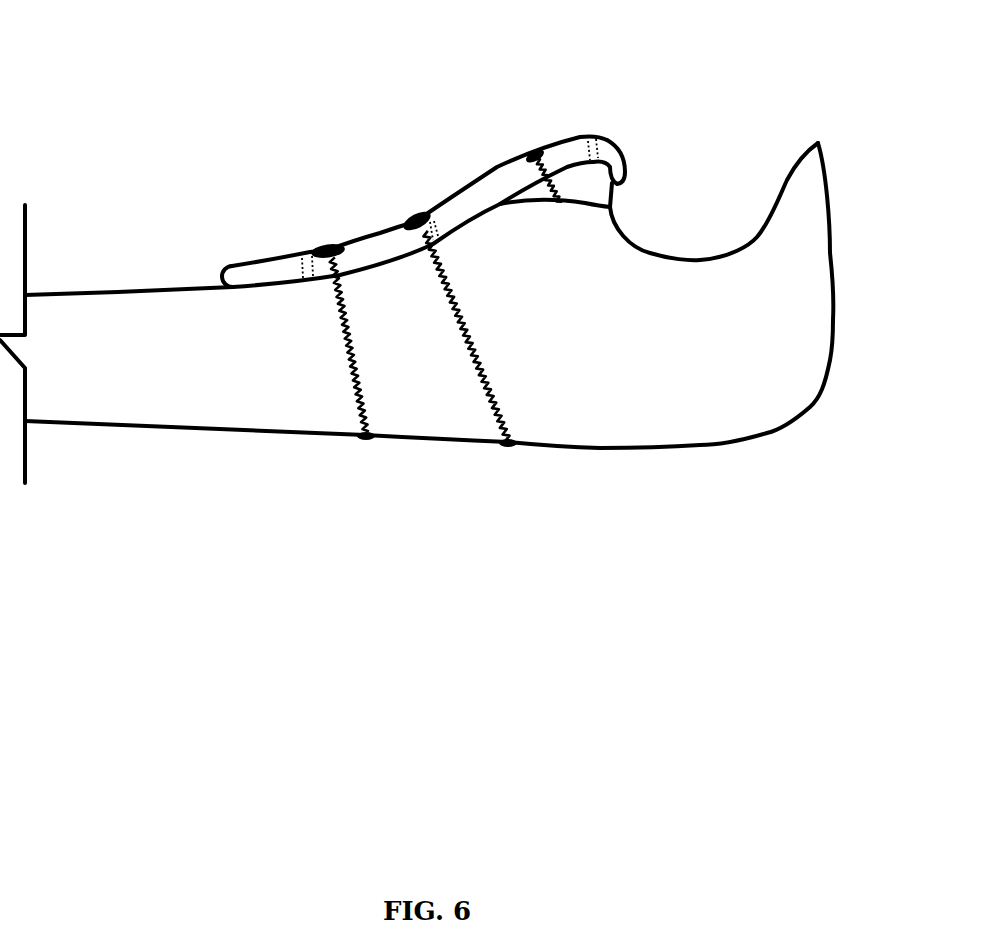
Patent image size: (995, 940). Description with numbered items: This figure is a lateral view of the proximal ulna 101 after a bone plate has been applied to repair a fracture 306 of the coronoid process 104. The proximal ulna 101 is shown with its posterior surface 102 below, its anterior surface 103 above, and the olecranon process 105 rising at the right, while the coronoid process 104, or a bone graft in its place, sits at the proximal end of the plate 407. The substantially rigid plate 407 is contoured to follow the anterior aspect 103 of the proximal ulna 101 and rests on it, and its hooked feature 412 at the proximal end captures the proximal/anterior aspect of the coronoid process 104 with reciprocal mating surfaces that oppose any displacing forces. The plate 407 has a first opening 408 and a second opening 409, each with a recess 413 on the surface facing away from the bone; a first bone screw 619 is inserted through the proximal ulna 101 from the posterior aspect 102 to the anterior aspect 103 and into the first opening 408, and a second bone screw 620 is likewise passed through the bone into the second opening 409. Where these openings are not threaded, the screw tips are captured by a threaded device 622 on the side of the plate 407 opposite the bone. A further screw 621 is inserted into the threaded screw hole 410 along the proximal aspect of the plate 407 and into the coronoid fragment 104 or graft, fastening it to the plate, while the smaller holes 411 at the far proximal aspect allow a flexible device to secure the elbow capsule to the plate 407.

The proximal ulna 101 is at (98, 344).
The posterior surface 102 is at (153, 425).
The anterior surface 103 is at (147, 292).
The coronoid process 104 is at (614, 192).
The olecranon process 105 is at (823, 173).
The fracture 306 is at (608, 206).
The plate 407 is at (228, 268).
The first opening 408 is at (303, 252).
The second opening 409 is at (436, 226).
The screw hole 410 is at (530, 148).
The smaller holes 411 is at (588, 137).
The hooked feature 412 is at (625, 163).
The recess 413 is at (316, 249).
The bone screw 619 is at (345, 372).
The second bone screw 620 is at (487, 375).
The screw 621 is at (542, 173).
The threaded device 622 is at (405, 220).